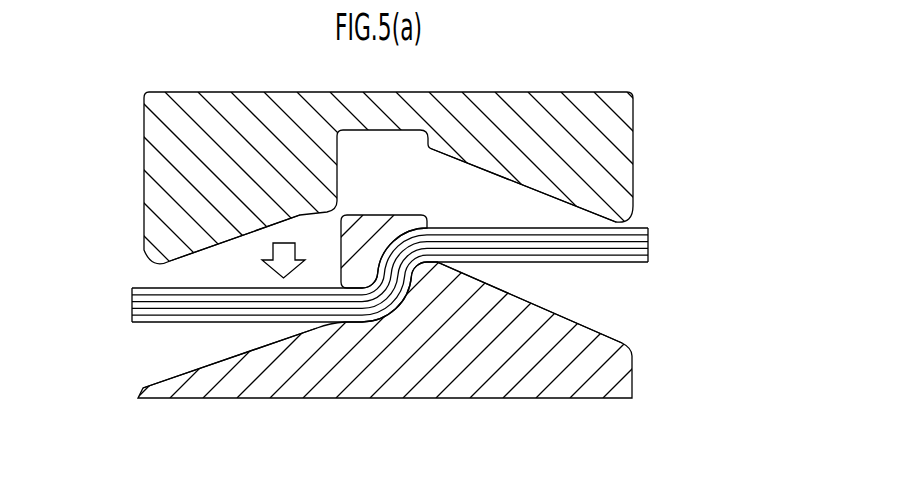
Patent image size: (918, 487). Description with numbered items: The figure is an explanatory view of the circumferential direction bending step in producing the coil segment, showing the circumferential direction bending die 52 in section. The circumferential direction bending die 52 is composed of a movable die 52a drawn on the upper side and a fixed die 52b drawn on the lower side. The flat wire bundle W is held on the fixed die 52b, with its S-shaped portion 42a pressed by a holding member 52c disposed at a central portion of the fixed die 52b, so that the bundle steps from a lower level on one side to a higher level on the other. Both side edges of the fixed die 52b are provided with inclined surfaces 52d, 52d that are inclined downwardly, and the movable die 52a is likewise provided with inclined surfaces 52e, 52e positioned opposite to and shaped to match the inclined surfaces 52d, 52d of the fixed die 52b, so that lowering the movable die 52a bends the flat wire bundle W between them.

The circumferential direction bending die 52 is at (652, 78).
The movable die 52a is at (633, 141).
The fixed die 52b is at (632, 370).
The holding member 52c is at (393, 215).
The inclined surface 52d is at (556, 310).
The inclined surface 52e is at (528, 187).
The flat wire bundle W is at (648, 229).
The S-shaped portion 42a is at (390, 292).